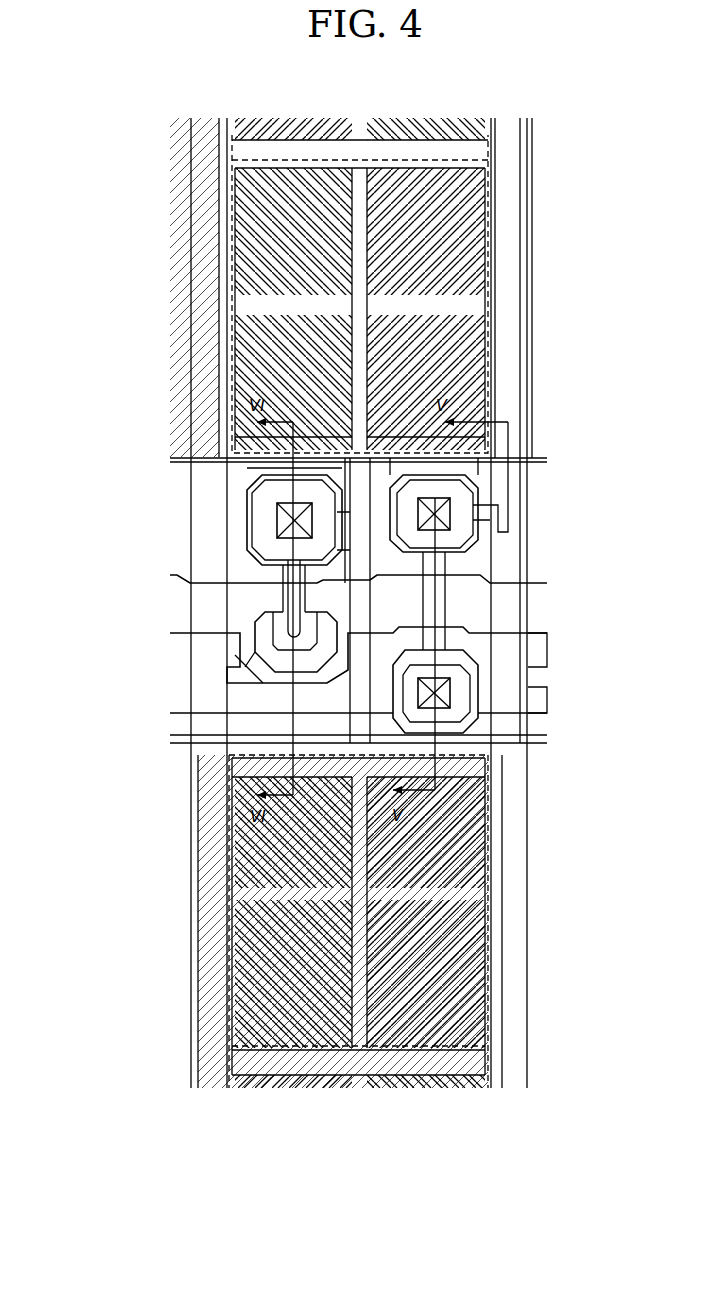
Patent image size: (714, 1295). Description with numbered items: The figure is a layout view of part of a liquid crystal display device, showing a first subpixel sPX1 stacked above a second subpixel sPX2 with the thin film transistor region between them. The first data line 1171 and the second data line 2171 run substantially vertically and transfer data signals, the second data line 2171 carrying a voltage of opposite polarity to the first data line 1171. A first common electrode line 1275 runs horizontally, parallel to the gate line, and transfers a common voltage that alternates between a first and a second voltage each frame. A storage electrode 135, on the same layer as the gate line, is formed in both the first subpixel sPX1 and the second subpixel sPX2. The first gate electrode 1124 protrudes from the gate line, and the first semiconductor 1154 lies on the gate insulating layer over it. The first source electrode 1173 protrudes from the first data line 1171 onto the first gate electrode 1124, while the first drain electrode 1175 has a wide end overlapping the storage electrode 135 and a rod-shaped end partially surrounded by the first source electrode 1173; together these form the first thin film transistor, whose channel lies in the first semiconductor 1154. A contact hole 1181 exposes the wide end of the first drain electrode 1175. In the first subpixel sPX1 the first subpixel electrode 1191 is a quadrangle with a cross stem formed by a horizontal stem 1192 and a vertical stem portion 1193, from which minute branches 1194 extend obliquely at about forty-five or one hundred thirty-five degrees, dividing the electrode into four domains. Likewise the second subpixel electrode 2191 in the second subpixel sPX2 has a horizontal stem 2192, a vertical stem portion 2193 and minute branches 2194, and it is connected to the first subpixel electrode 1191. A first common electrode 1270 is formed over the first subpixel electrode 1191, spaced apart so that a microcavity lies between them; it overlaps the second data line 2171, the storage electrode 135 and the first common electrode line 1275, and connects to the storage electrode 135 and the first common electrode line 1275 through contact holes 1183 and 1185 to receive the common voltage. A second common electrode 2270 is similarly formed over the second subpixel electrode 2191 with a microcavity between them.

The first subpixel electrode 1191 is at (265, 284).
The horizontal stem 1192 is at (255, 285).
The vertical stem portion 1193 is at (360, 197).
The minute branches 1194 is at (280, 260).
The first common electrode 1270 is at (521, 130).
The first subpixel sPX1 is at (361, 160).
The storage electrode 135 is at (333, 473).
The first data line 1171 is at (190, 480).
The contact hole 1181 is at (277, 520).
The contact hole 1183 is at (440, 500).
The contact hole 1185 is at (450, 693).
The second data line 2171 is at (530, 555).
The first drain electrode 1175 is at (283, 600).
The first semiconductor 1154 is at (283, 605).
The first source electrode 1173 is at (253, 640).
The first gate electrode 1124 is at (287, 683).
The first common electrode line 1275 is at (183, 737).
The second common electrode 2270 is at (198, 835).
The second subpixel sPX2 is at (230, 918).
The second subpixel electrode 2191 is at (358, 971).
The horizontal stem 2192 is at (275, 905).
The vertical stem portion 2193 is at (365, 1025).
The minute branches 2194 is at (315, 1000).